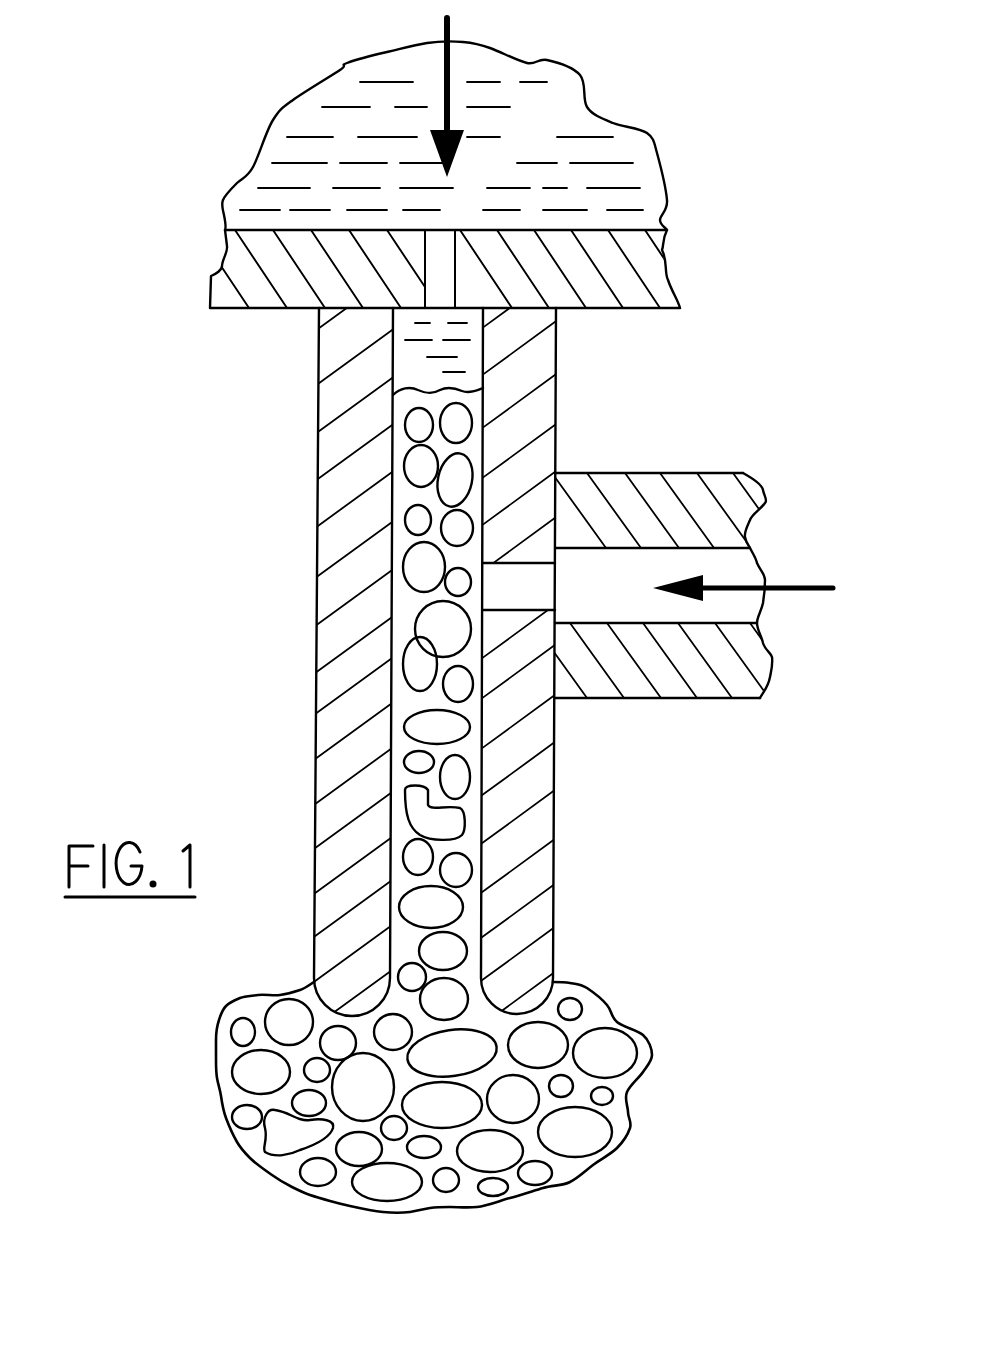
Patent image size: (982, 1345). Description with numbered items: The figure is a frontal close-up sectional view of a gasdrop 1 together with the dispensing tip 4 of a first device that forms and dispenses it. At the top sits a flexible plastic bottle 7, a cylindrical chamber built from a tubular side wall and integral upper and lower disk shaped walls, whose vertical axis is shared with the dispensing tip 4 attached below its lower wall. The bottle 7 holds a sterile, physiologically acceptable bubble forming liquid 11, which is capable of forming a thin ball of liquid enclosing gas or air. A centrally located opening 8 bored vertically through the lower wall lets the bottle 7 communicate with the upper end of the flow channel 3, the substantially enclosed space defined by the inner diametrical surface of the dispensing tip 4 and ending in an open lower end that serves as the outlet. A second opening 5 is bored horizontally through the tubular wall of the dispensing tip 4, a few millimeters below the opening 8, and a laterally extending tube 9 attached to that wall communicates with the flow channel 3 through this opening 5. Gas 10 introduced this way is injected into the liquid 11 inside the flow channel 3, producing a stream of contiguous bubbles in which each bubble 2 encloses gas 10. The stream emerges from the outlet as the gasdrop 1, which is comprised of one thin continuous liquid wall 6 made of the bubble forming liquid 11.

The gasdrop 1 is at (593, 1165).
The bubble 2 is at (290, 1138).
The flow channel 3 is at (483, 348).
The dispensing tip 4 is at (313, 730).
The opening 5 is at (557, 588).
The liquid wall 6 is at (430, 386).
The flexible plastic bottle 7 is at (268, 308).
The opening 8 is at (443, 230).
The tube 9 is at (713, 698).
The gas 10 is at (727, 567).
The bubble forming liquid 11 is at (317, 142).